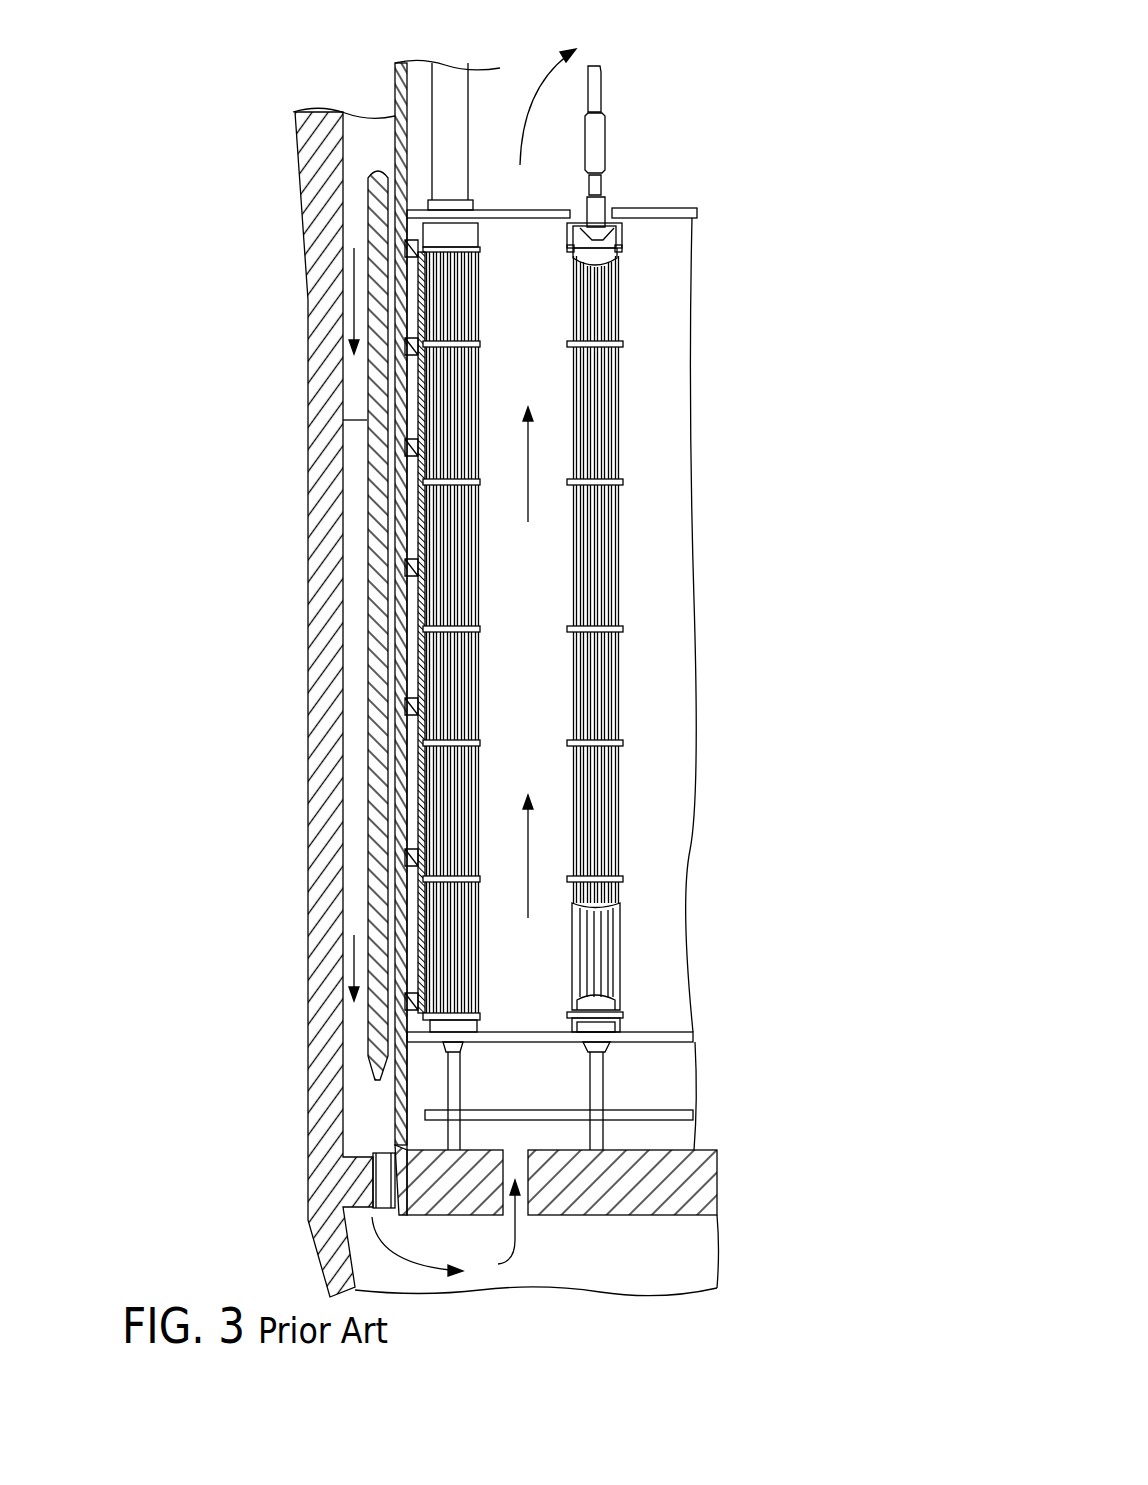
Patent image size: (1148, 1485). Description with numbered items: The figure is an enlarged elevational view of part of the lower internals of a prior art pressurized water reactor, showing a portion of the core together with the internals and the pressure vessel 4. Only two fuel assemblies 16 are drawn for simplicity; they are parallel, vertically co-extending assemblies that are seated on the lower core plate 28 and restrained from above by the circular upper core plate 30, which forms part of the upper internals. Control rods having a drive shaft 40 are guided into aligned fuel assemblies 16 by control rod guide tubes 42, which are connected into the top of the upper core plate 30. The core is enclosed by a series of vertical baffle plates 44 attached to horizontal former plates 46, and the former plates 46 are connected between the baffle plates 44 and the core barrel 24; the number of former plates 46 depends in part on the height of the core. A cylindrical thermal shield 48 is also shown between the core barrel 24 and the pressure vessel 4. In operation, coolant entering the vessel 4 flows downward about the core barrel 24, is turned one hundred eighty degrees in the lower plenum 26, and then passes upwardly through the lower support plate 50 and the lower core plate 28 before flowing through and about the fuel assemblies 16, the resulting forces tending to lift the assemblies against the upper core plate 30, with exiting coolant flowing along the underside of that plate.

The pressure vessel 4 is at (308, 232).
The fuel assemblies 16 is at (609, 523).
The core barrel 24 is at (388, 513).
The lower plenum 26 is at (668, 1258).
The lower core plate 28 is at (650, 1032).
The upper core plate 30 is at (652, 208).
The drive shaft 40 is at (602, 143).
The control rod guide tubes 42 is at (467, 150).
The baffle plates 44 is at (410, 665).
The former plates 46 is at (413, 245).
The thermal shield 48 is at (343, 420).
The lower support plate 50 is at (668, 1148).